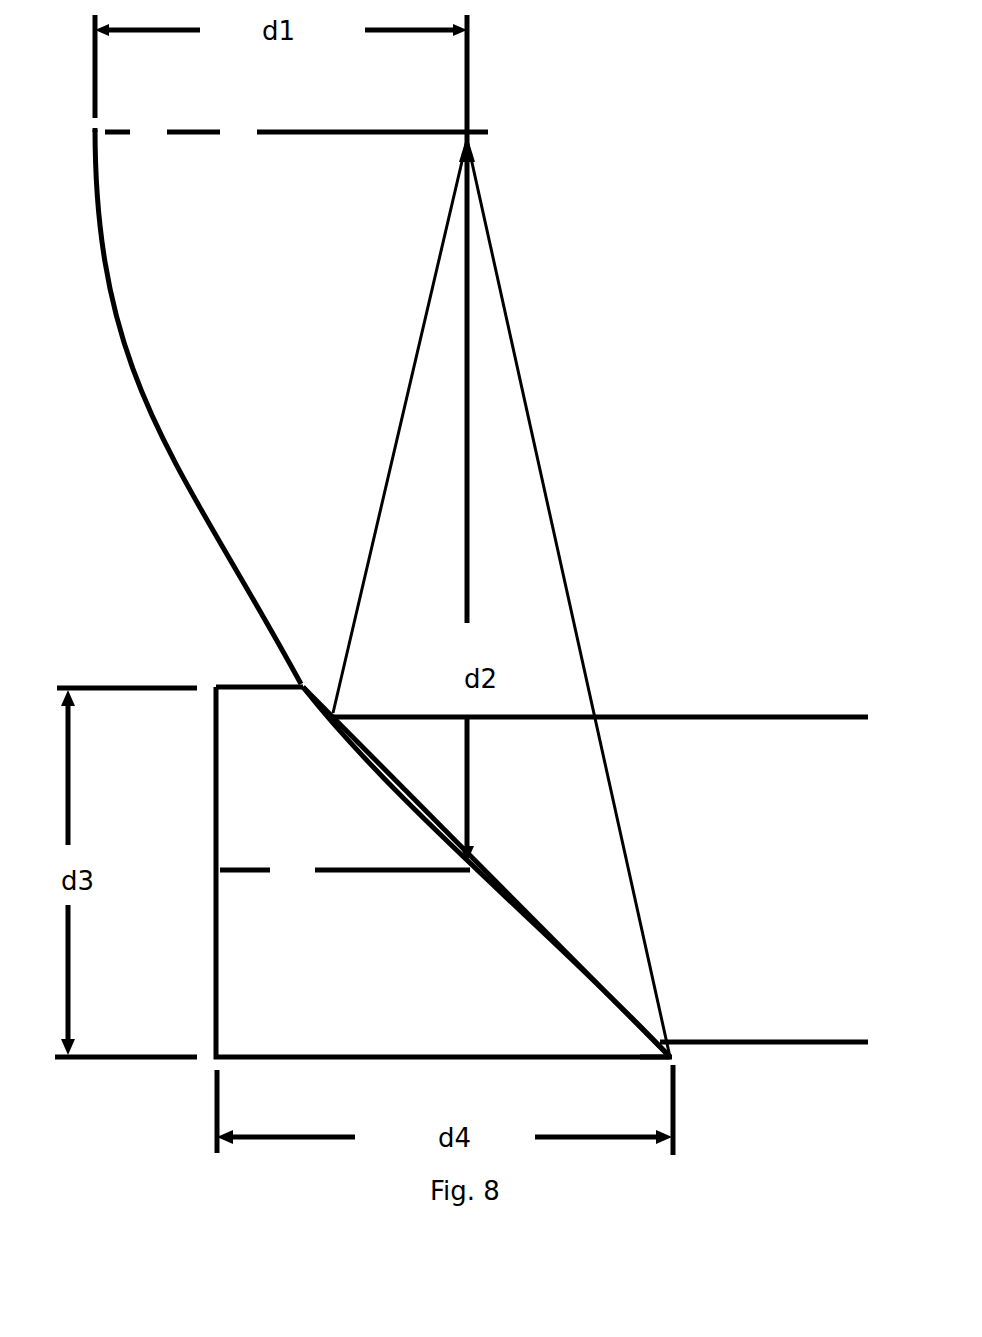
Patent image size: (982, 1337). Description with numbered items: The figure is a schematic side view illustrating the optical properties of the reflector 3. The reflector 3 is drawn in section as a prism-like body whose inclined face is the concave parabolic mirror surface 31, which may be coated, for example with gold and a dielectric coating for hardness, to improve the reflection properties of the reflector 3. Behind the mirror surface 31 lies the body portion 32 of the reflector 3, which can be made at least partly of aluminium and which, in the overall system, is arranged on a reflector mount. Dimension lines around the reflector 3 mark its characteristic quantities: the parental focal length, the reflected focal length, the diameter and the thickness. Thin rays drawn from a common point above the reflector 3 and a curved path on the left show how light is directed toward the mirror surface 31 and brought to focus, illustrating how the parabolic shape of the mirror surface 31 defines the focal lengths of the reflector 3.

The reflector 3 is at (697, 954).
The concave parabolic mirror surface 31 is at (537, 928).
The body portion 32 is at (593, 1032).